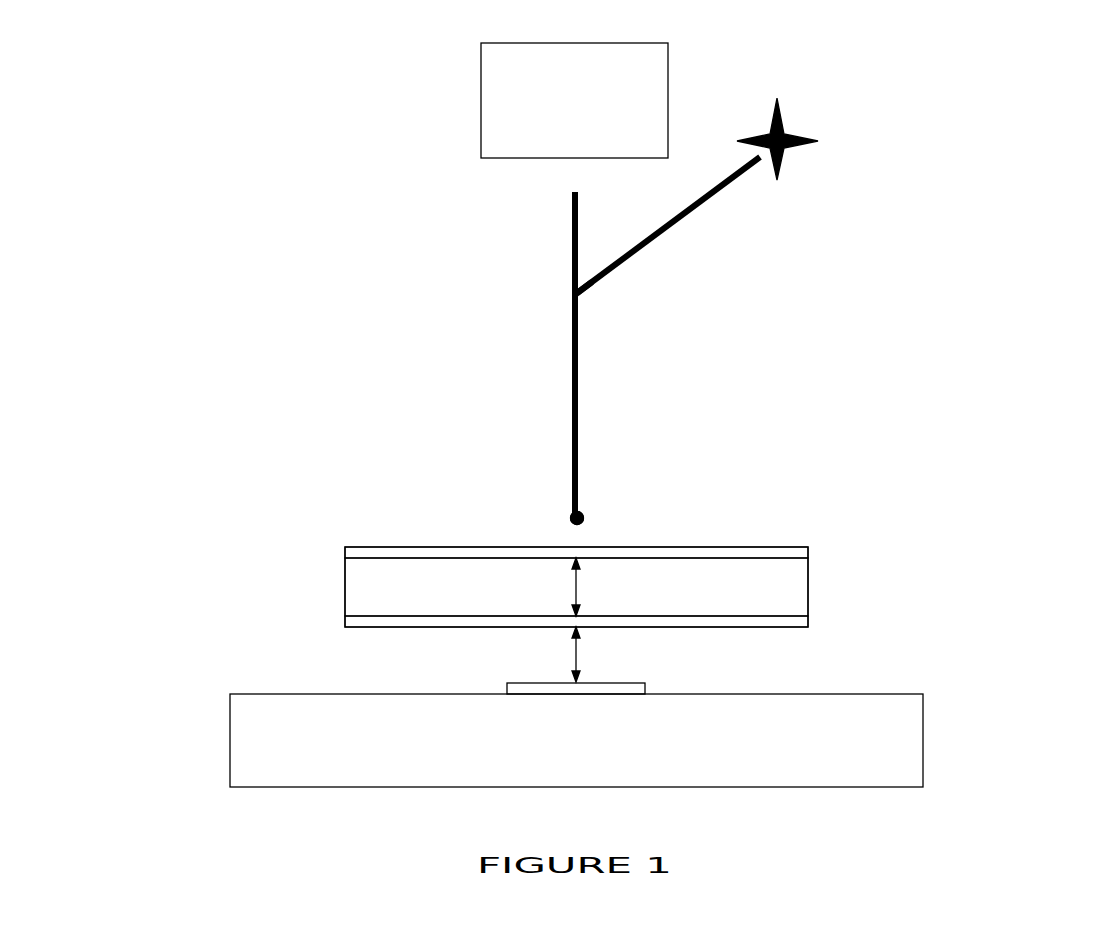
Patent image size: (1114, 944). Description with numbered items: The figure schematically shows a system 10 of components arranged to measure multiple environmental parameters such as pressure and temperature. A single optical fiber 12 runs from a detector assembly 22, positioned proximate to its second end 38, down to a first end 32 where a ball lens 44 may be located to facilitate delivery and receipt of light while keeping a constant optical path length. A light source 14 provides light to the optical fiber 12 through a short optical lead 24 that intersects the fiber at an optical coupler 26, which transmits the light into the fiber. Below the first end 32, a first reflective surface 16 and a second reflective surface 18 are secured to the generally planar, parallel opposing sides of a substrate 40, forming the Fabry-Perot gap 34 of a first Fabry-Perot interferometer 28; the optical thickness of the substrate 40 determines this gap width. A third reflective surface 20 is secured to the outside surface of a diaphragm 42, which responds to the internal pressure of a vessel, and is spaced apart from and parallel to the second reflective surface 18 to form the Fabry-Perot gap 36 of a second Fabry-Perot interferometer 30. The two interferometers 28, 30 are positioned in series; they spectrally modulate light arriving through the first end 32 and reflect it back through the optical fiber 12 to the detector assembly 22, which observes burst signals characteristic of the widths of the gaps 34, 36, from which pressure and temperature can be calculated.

The system 10 is at (250, 372).
The optical fiber 12 is at (578, 395).
The light source 14 is at (793, 135).
The first reflective surface 16 is at (797, 555).
The second reflective surface 18 is at (812, 620).
The third reflective surface 20 is at (647, 683).
The detector assembly 22 is at (517, 101).
The optical lead 24 is at (717, 193).
The optical coupler 26 is at (578, 297).
The first Fabry-Perot interferometer 28 is at (320, 529).
The second Fabry-Perot interferometer 30 is at (435, 660).
The first end 32 is at (580, 508).
The Fabry-Perot gap 34 is at (594, 587).
The Fabry-Perot gap 36 is at (556, 654).
The second end 38 is at (575, 192).
The substrate 40 is at (345, 580).
The diaphragm 42 is at (912, 728).
The ball lens 44 is at (571, 516).